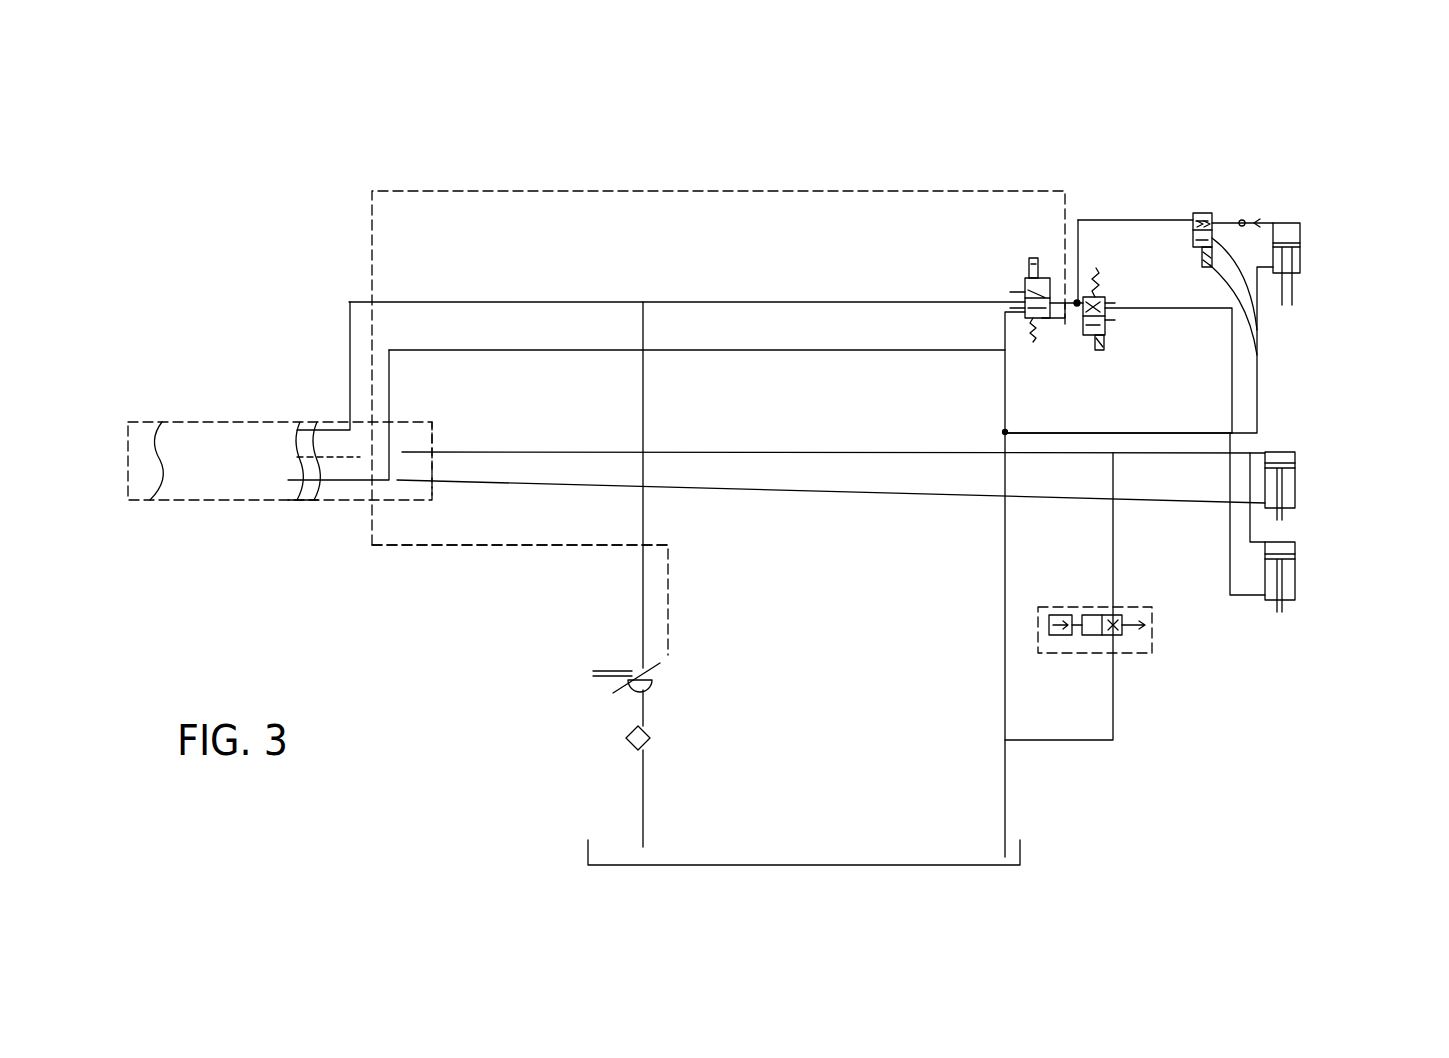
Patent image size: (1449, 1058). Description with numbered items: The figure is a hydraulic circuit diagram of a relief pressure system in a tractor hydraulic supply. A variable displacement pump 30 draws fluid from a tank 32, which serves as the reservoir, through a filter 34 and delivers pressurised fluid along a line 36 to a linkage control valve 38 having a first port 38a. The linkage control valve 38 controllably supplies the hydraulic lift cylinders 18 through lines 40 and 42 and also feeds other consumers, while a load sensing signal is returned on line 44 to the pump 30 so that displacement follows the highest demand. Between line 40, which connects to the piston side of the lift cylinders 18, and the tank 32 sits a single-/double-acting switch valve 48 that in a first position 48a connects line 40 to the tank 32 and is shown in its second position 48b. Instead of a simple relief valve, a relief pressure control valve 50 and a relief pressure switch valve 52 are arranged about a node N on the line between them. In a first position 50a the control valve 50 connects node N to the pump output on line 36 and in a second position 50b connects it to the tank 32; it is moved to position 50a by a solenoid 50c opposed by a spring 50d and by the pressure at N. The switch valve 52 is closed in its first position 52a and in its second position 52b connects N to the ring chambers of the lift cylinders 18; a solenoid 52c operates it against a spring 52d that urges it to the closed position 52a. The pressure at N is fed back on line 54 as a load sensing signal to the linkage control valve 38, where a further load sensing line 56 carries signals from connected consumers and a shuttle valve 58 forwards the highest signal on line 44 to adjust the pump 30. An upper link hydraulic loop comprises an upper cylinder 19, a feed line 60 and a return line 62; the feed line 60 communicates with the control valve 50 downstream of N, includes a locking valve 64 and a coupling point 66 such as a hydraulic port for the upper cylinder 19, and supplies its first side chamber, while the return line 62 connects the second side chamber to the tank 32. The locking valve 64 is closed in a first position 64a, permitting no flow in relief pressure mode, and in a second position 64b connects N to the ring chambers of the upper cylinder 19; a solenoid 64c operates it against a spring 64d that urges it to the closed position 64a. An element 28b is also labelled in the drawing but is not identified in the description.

The hydraulic lift cylinders 18 is at (1290, 512).
The upper cylinder 19 is at (1300, 246).
The housing wall 28b is at (440, 438).
The variable displacement pump 30 is at (648, 688).
The tank 32 is at (588, 840).
The filter 34 is at (648, 748).
The line 36 is at (646, 397).
The linkage control valve 38 is at (302, 505).
The first port 38a is at (437, 490).
The line 40 is at (725, 446).
The line 42 is at (705, 493).
The load sensing line 44 is at (445, 553).
The single-/double-acting switch valve 48 is at (1148, 655).
The first position 48a is at (1090, 612).
The second position 48b is at (1122, 612).
The relief pressure control valve 50 is at (1003, 255).
The first position 50a is at (1020, 292).
The second position 50b is at (1022, 310).
The solenoid 50c is at (1033, 258).
The spring 50d is at (1034, 342).
The relief pressure switch valve 52 is at (1095, 374).
The first position 52a is at (1108, 302).
The second position 52b is at (1108, 320).
The solenoid 52c is at (1106, 346).
The spring 52d is at (1100, 268).
The line 54 is at (530, 193).
The further load sensing line 56 is at (280, 438).
The shuttle valve 58 is at (358, 468).
The feed line 60 is at (1153, 218).
The return line 62 is at (1260, 397).
The locking valve 64 is at (1190, 214).
The first position 64a is at (1212, 217).
The second position 64b is at (1260, 318).
The solenoid 64c is at (1258, 350).
The spring 64d is at (1200, 214).
The coupling point 66 is at (1260, 212).
The node N is at (1080, 300).